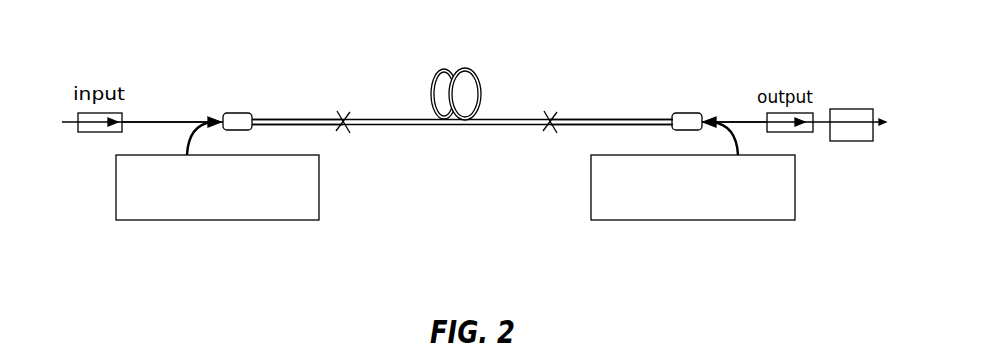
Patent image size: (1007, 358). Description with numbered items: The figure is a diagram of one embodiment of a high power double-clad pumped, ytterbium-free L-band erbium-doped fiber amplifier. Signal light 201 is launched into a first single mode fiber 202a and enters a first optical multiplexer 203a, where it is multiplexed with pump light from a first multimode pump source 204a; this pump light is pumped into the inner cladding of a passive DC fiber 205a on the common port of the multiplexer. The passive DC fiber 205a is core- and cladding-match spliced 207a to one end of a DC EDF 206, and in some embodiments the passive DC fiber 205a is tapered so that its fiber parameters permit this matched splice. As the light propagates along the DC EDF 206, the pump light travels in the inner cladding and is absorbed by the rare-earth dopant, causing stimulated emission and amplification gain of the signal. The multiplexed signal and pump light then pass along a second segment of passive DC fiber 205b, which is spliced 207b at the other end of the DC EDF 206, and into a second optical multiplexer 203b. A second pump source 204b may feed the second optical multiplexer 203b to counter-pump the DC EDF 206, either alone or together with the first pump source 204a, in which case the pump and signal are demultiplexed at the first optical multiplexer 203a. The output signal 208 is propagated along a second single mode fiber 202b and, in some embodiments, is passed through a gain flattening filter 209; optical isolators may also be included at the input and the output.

The signal light 201 is at (90, 133).
The first single mode fiber 202a is at (173, 117).
The first optical multiplexer 203a is at (238, 112).
The first multimode pump source 204a is at (213, 220).
The passive DC fiber 205a is at (305, 116).
The DC EDF 206 is at (455, 70).
The splice 207a is at (345, 124).
The splice 207b is at (549, 124).
The passive DC fiber 205b is at (607, 116).
The second optical multiplexer 203b is at (682, 112).
The second pump source 204b is at (695, 220).
The second single mode fiber 202b is at (743, 116).
The output signal 208 is at (803, 133).
The gain flattening filter 209 is at (852, 109).